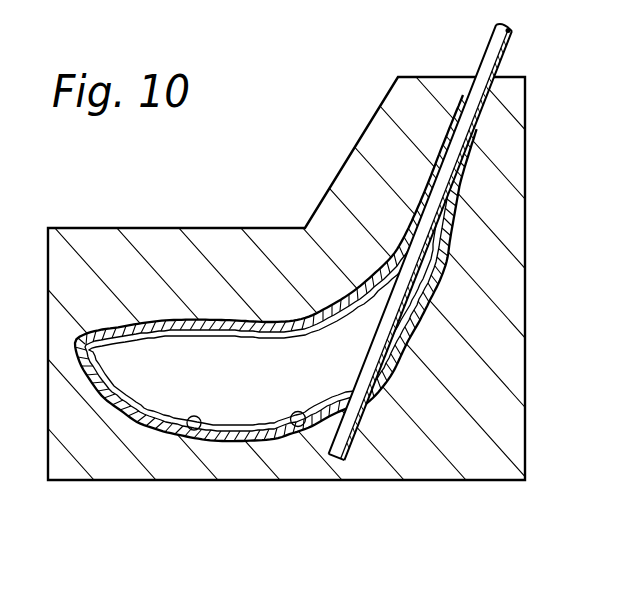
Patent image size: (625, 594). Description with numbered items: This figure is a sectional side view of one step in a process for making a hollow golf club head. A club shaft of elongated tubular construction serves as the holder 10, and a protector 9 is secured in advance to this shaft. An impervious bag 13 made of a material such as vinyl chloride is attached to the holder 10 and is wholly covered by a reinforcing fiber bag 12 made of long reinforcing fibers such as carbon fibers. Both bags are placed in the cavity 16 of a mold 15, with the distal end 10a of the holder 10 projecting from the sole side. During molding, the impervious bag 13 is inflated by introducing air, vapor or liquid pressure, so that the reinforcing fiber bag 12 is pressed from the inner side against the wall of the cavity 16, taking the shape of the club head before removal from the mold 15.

The protector 9 is at (317, 311).
The holder 10 is at (511, 40).
The distal end of the holder 10a is at (352, 450).
The reinforcing fiber bag 12 is at (267, 440).
The impervious bag 13 is at (299, 427).
The mold 15 is at (265, 237).
The cavity 16 is at (194, 430).